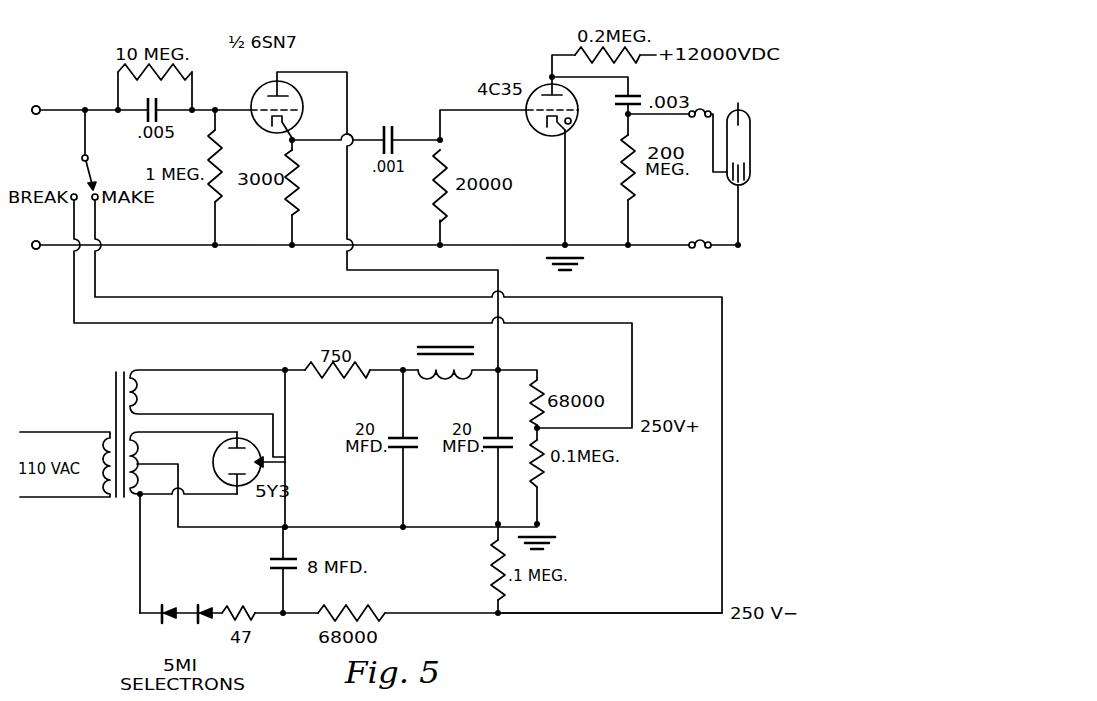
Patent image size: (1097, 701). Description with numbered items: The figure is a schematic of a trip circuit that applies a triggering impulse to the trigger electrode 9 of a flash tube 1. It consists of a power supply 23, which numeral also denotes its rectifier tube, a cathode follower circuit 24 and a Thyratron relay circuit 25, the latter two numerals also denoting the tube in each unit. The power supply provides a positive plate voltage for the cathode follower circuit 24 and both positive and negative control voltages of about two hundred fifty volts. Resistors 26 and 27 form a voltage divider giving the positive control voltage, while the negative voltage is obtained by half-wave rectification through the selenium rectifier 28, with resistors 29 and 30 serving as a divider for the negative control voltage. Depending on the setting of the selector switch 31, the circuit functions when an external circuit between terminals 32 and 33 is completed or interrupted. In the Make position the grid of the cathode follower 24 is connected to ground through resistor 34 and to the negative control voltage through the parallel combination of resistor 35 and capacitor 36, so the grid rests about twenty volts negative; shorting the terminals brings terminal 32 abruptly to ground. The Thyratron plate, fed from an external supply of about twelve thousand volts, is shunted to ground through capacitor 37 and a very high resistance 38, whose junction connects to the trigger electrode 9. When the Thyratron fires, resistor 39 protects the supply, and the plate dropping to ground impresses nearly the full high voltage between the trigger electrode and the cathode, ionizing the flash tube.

The flash tube 1 is at (741, 130).
The trigger electrode 9 is at (744, 168).
The power supply 23 is at (262, 470).
The cathode follower circuit 24 is at (258, 90).
The Thyratron relay circuit 25 is at (548, 85).
The resistor 26 is at (540, 385).
The resistor 27 is at (542, 482).
The selenium rectifier 28 is at (186, 608).
The resistor 29 is at (368, 608).
The resistor 30 is at (493, 570).
The selector switch 31 is at (90, 177).
The terminal 32 is at (38, 115).
The terminal 33 is at (39, 241).
The resistor 34 is at (212, 165).
The resistor 35 is at (118, 70).
The capacitor 36 is at (158, 115).
The capacitor 37 is at (640, 97).
The very high resistance 38 is at (632, 198).
The resistor 39 is at (640, 55).